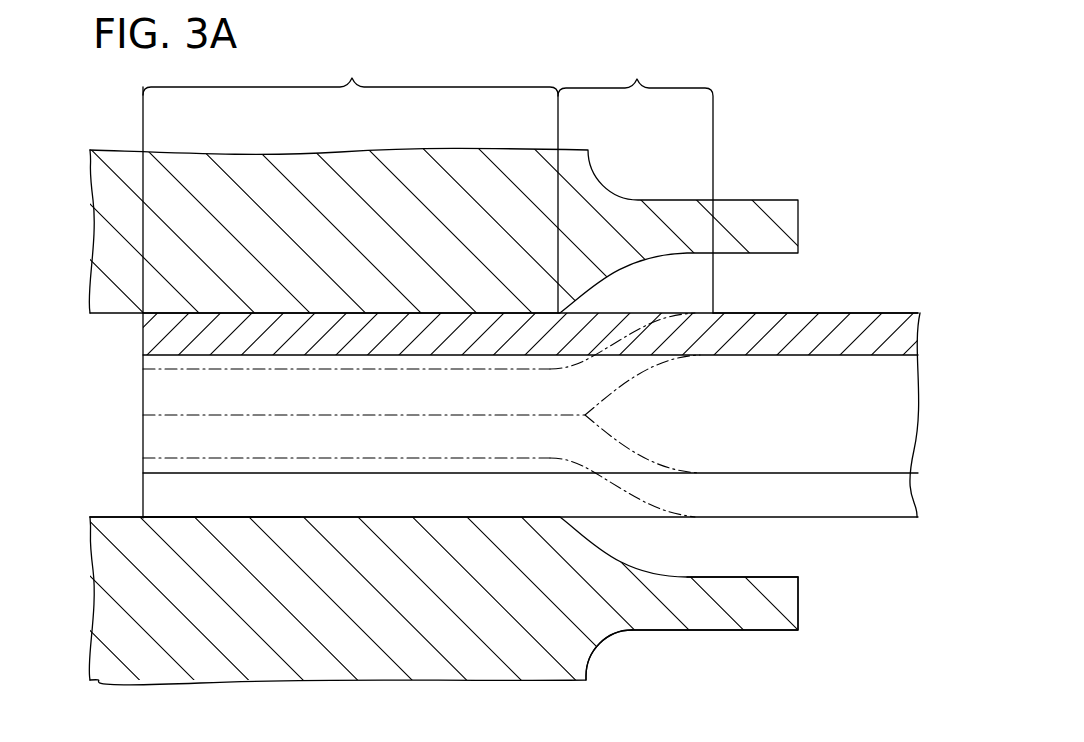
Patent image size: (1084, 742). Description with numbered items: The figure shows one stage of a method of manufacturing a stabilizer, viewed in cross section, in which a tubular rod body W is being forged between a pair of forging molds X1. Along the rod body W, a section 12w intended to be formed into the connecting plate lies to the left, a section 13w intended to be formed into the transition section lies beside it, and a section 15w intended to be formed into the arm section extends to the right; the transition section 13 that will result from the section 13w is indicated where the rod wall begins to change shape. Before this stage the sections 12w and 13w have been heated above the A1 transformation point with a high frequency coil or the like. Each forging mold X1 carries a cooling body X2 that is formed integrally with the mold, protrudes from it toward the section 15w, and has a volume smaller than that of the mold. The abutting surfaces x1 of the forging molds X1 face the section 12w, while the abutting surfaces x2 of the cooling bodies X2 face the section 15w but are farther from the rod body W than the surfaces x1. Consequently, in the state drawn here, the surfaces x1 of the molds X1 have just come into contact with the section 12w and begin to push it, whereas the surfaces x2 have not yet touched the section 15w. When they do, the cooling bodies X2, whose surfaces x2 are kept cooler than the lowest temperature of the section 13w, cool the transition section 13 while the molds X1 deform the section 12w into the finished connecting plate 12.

The connecting plate 12 is at (405, 372).
The section intended to be formed into the connecting plate 12w is at (350, 177).
The branching layer of tube 13 is at (622, 337).
The section intended to be formed into the transition section 13w is at (635, 177).
The section intended to be formed into the arm section 15w is at (808, 312).
The rod body W is at (874, 302).
The abutting surfaces of the forging molds x1 is at (163, 518).
The abutting surfaces of the cooling bodies x2 is at (720, 577).
The forging molds X1 is at (599, 670).
The cooling bodies X2 is at (770, 643).